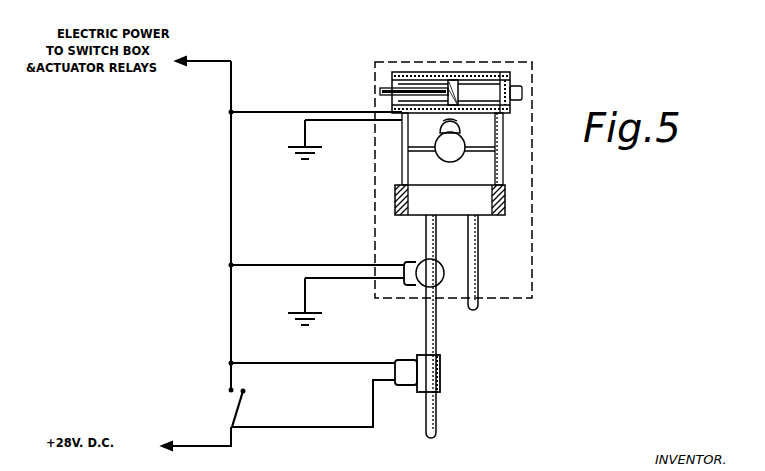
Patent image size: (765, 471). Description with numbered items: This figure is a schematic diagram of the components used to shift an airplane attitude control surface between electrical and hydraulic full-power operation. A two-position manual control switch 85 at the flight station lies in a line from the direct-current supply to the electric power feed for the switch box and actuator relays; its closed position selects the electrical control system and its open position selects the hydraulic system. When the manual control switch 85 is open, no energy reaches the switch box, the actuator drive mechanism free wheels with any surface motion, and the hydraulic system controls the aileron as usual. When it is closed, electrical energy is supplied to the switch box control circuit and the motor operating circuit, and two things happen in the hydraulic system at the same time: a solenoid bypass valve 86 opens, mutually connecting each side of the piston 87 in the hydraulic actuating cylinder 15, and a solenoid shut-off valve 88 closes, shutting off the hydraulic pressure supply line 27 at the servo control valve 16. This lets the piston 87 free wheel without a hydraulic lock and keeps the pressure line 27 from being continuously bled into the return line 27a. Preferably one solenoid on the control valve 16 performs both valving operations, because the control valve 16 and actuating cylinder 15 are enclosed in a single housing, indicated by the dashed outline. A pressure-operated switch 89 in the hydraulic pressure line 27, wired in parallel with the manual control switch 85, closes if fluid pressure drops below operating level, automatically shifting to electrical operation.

The hydraulic actuating cylinder 15 is at (518, 62).
The servo control valve 16 is at (450, 200).
The hydraulic pressure supply line 27 is at (437, 414).
The return line 27a is at (478, 305).
The manual control switch 85 is at (232, 410).
The solenoid bypass valve 86 is at (440, 158).
The piston 87 is at (455, 74).
The solenoid shut-off valve 88 is at (444, 270).
The pressure-operated switch 89 is at (428, 372).